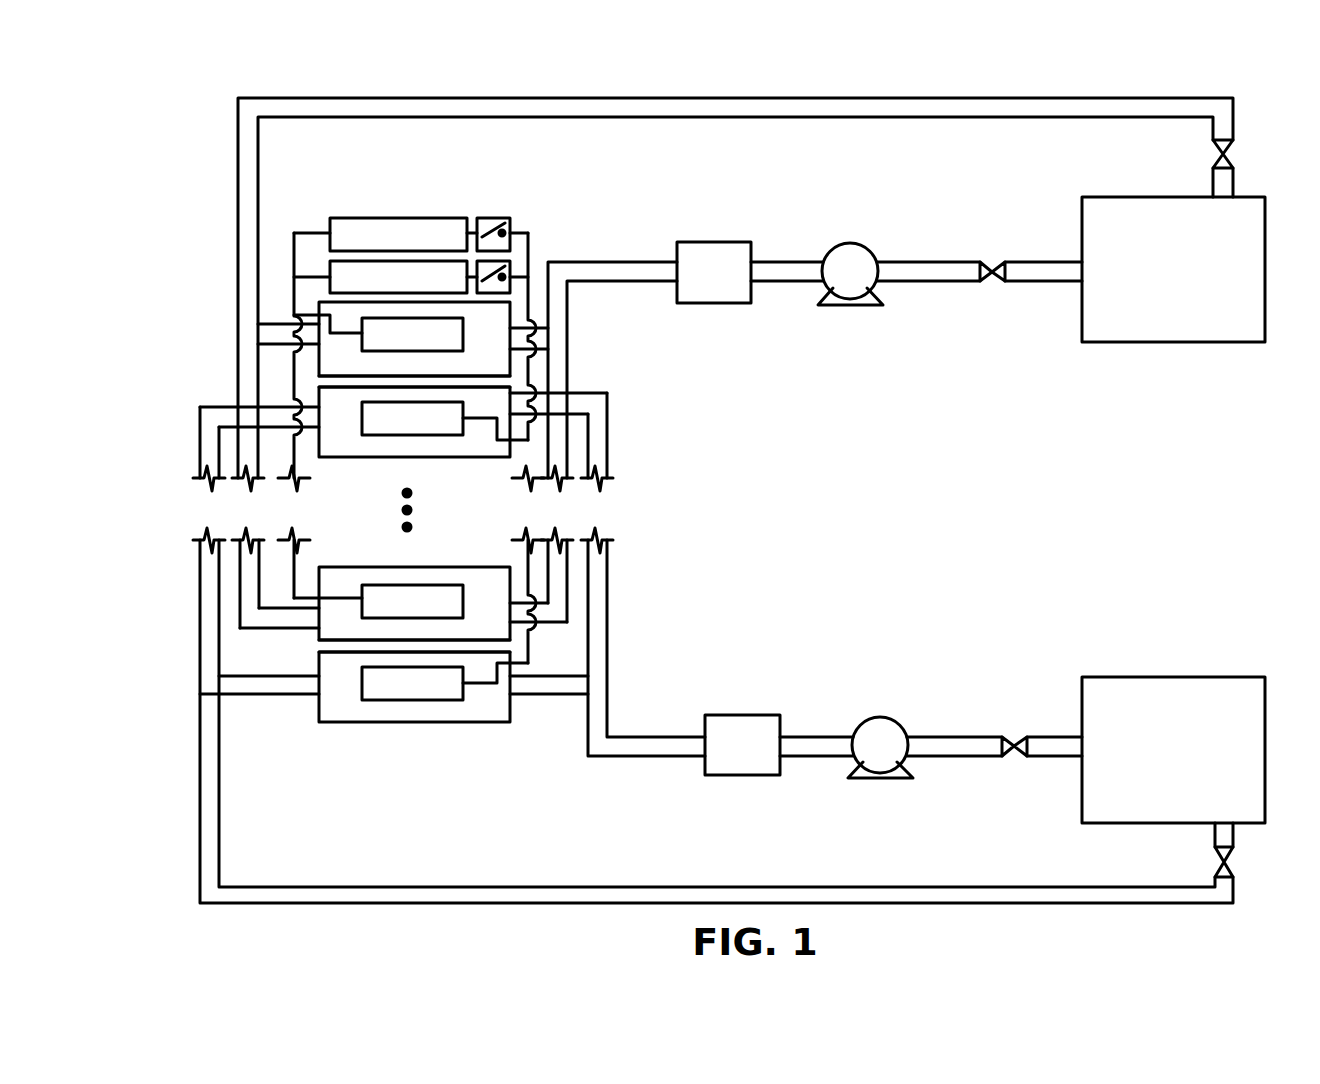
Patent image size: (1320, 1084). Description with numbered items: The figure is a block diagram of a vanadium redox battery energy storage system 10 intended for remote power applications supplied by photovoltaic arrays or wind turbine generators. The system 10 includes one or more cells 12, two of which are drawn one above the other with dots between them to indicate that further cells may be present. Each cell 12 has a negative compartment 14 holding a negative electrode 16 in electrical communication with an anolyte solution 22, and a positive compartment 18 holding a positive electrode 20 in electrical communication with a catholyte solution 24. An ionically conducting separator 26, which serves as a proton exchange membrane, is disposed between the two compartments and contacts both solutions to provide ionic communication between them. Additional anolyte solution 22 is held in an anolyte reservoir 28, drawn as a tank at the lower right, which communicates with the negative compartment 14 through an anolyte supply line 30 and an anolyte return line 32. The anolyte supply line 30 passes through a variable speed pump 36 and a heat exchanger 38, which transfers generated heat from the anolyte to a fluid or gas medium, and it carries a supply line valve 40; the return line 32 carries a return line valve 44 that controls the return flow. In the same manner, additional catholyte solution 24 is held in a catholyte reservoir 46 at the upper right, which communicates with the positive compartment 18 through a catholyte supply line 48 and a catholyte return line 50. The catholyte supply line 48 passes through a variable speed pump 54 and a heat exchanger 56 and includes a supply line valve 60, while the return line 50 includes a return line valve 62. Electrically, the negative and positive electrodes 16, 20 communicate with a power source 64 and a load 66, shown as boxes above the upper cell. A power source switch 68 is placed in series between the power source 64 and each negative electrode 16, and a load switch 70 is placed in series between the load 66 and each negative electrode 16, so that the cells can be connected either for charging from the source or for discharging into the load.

The vanadium redox battery energy storage system 10 is at (192, 126).
The cell 12 is at (434, 542).
The negative compartment 14 is at (472, 416).
The negative electrode 16 is at (399, 433).
The positive compartment 18 is at (478, 348).
The positive electrode 20 is at (398, 349).
The anolyte solution 22 is at (325, 431).
The catholyte solution 24 is at (324, 370).
The ionically conducting separator 26 is at (512, 383).
The anolyte reservoir 28 is at (1159, 764).
The anolyte supply line 30 is at (627, 743).
The anolyte return line 32 is at (218, 722).
The pump 36 is at (866, 758).
The heat exchanger 38 is at (728, 758).
The supply line valve 40 is at (1013, 755).
The return line valve 44 is at (1233, 855).
The catholyte reservoir 46 is at (1159, 284).
The catholyte supply line 48 is at (1042, 272).
The catholyte return line 50 is at (238, 300).
The pump 54 is at (836, 283).
The heat exchanger 56 is at (699, 284).
The supply line valve 60 is at (992, 282).
The return line valve 62 is at (1236, 152).
The power source 64 is at (383, 292).
The load 66 is at (383, 249).
The power source switch 68 is at (508, 268).
The load switch 70 is at (508, 222).